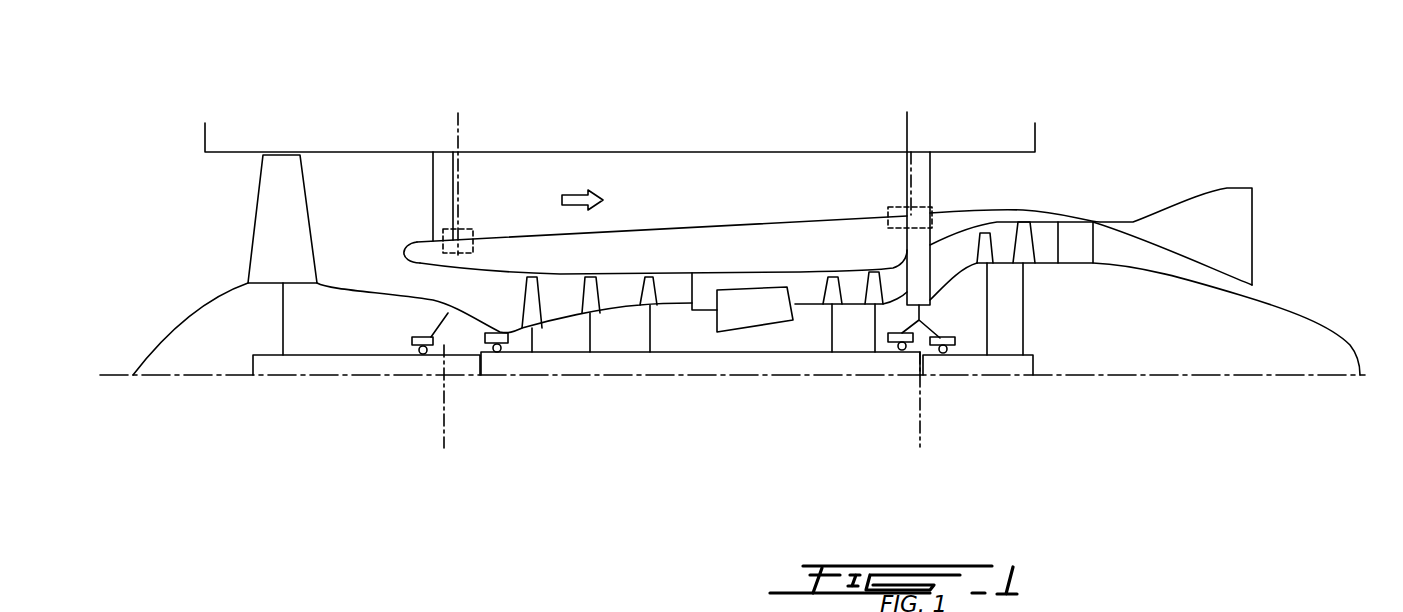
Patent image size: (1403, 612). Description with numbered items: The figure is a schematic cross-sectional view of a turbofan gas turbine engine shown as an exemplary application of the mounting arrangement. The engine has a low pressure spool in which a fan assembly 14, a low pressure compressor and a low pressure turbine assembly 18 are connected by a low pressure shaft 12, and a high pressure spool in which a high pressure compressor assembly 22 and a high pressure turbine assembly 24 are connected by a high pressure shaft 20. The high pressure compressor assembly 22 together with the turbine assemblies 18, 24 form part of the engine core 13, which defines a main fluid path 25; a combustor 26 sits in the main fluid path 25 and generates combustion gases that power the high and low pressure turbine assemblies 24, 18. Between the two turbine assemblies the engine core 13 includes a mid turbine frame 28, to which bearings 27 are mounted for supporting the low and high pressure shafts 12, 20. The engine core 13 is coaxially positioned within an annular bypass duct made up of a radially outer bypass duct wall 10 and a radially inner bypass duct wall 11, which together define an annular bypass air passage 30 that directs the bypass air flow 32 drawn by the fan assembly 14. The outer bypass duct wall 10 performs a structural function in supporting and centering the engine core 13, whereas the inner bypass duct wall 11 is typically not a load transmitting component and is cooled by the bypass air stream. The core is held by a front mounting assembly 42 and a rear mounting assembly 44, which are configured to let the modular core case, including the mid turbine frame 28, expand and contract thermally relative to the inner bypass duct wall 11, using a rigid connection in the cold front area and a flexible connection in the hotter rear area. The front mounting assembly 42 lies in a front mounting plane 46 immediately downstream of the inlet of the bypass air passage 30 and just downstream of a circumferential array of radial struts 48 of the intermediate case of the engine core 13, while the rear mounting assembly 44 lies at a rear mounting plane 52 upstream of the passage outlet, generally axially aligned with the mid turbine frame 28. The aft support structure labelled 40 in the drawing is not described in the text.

The annular radially outer bypass duct wall 10 is at (620, 152).
The annular radially inner bypass duct wall 11 is at (663, 228).
The low pressure shaft 12 is at (338, 363).
The engine core 13 is at (802, 271).
The fan assembly 14 is at (283, 176).
The low pressure turbine assembly 18 is at (1027, 250).
The high pressure shaft 20 is at (795, 362).
The high pressure compressor assembly 22 is at (590, 303).
The high pressure turbine assembly 24 is at (873, 296).
The main fluid path 25 is at (620, 292).
The combustor 26 is at (743, 310).
The bearings 27 is at (895, 348).
The mid turbine frame 28 is at (933, 295).
The annular bypass air passage 30 is at (693, 188).
The bypass air flow 32 is at (573, 197).
The aft support pylon 40 is at (918, 183).
The front mounting assembly 42 is at (457, 252).
The rear mounting assembly 44 is at (892, 206).
The front mounting plane 46 is at (459, 130).
The radial struts 48 is at (433, 196).
The rear mounting plane 52 is at (907, 127).